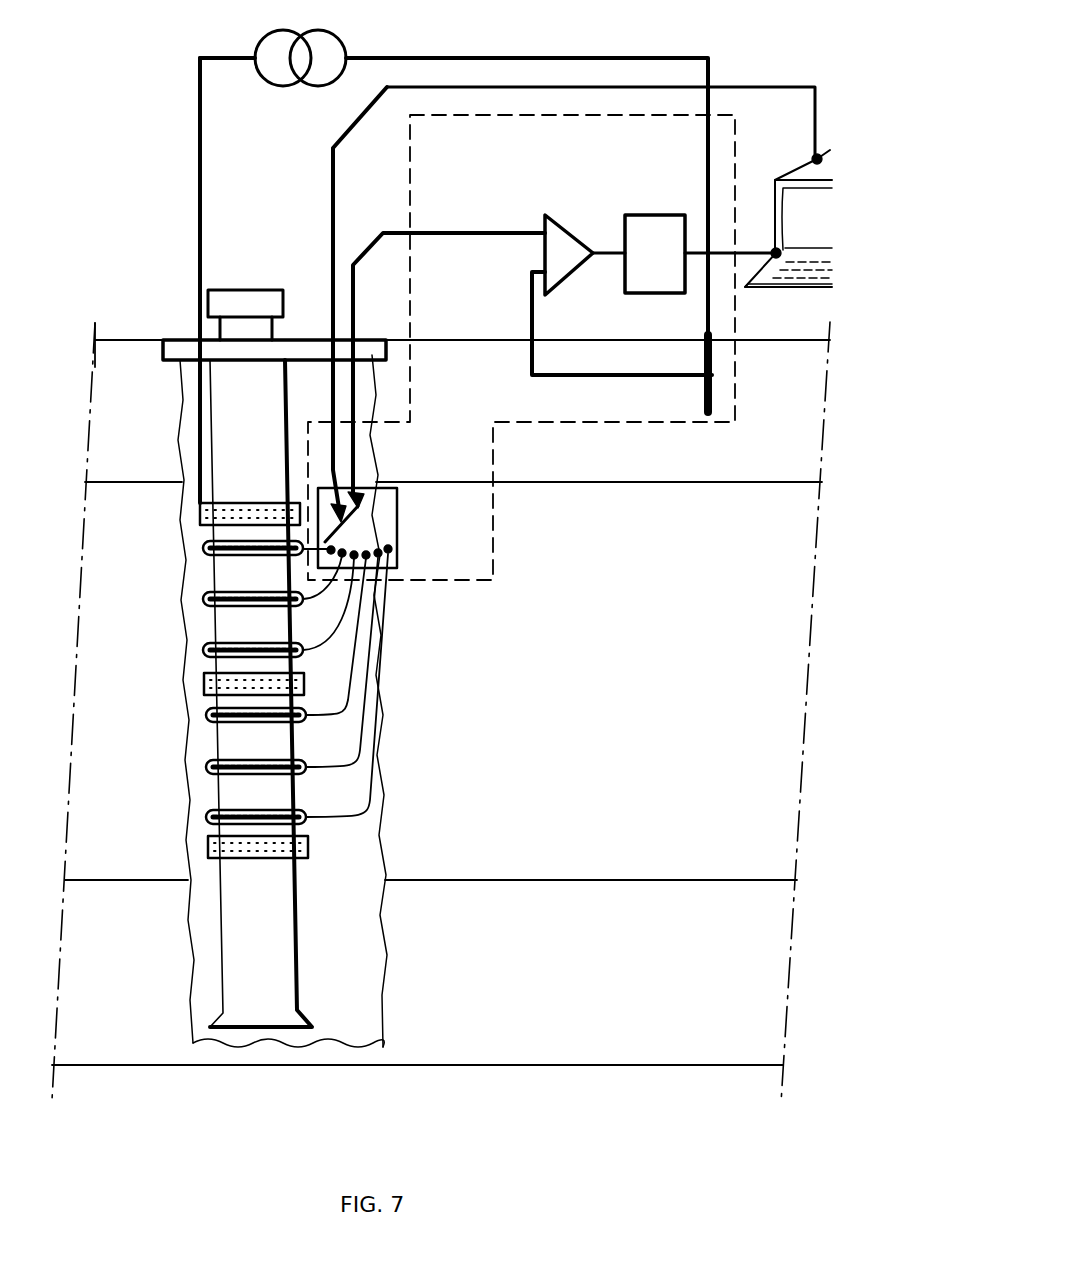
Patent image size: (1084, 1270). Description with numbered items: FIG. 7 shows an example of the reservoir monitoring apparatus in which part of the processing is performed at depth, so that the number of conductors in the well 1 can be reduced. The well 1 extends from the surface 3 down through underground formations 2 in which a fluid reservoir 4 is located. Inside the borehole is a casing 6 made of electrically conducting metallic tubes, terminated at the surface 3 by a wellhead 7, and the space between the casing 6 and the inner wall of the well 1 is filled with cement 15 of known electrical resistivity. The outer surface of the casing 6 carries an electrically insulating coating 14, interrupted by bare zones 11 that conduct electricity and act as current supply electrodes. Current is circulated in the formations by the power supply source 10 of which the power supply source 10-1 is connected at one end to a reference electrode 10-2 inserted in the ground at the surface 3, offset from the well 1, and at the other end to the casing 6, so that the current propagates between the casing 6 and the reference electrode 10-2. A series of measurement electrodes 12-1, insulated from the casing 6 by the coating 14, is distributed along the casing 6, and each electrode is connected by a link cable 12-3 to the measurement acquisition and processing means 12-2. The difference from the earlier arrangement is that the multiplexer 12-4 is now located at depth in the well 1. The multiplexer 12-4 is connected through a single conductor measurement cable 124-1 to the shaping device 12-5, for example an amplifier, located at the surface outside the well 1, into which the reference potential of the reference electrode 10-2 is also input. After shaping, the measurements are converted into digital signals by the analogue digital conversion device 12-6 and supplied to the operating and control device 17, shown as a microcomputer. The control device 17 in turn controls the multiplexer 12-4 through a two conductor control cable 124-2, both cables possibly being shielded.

The well 1 is at (360, 912).
The underground formations 2 is at (100, 385).
The surface 3 is at (135, 340).
The fluid reservoir 4 is at (97, 634).
The casing 6 is at (224, 950).
The wellhead 7 is at (258, 297).
The power source 10 is at (266, 33).
The power supply source 10-1 is at (330, 38).
The reference electrode 10-2 is at (716, 388).
The bare zones 11 is at (176, 565).
The measurement electrodes 12-1 is at (207, 812).
The measurement acquisition and processing means 12-2 is at (598, 112).
The link cables 12-3 is at (368, 735).
The multiplexer 12-4 is at (388, 530).
The shaping device 12-5 is at (563, 235).
The analogue digital conversion device 12-6 is at (652, 222).
The electrically insulating coating 14 is at (228, 424).
The cement 15 is at (335, 990).
The operating and control device 17 is at (775, 180).
The measurement cable 124-1 is at (353, 290).
The control cable 124-2 is at (333, 185).